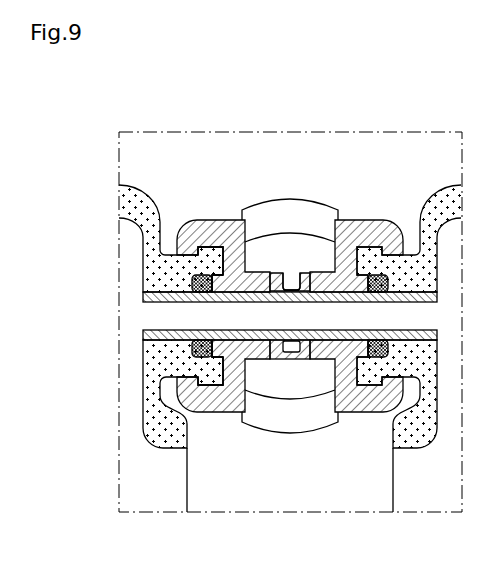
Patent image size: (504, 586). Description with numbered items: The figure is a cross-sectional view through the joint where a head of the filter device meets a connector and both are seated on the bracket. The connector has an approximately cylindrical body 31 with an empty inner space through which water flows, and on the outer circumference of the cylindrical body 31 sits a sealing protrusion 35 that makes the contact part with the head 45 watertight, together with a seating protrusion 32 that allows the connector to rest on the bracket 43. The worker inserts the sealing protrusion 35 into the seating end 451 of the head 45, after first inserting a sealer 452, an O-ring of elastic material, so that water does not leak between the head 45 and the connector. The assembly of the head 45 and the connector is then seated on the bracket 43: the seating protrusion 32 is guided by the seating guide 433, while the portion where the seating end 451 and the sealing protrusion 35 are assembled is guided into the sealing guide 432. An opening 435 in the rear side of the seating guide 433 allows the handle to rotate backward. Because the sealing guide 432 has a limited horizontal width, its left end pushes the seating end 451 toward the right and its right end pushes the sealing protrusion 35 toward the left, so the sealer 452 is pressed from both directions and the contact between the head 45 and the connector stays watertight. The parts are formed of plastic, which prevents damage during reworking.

The cylindrical body 31 is at (152, 295).
The seating protrusion 32 is at (303, 356).
The sealing protrusion 35 is at (215, 360).
The bracket 43 is at (366, 232).
The sealing guide 432 is at (210, 252).
The seating guide 433 is at (258, 360).
The opening 435 is at (291, 243).
The head 45 is at (125, 203).
The seating end 451 is at (220, 248).
The sealer 452 is at (200, 276).